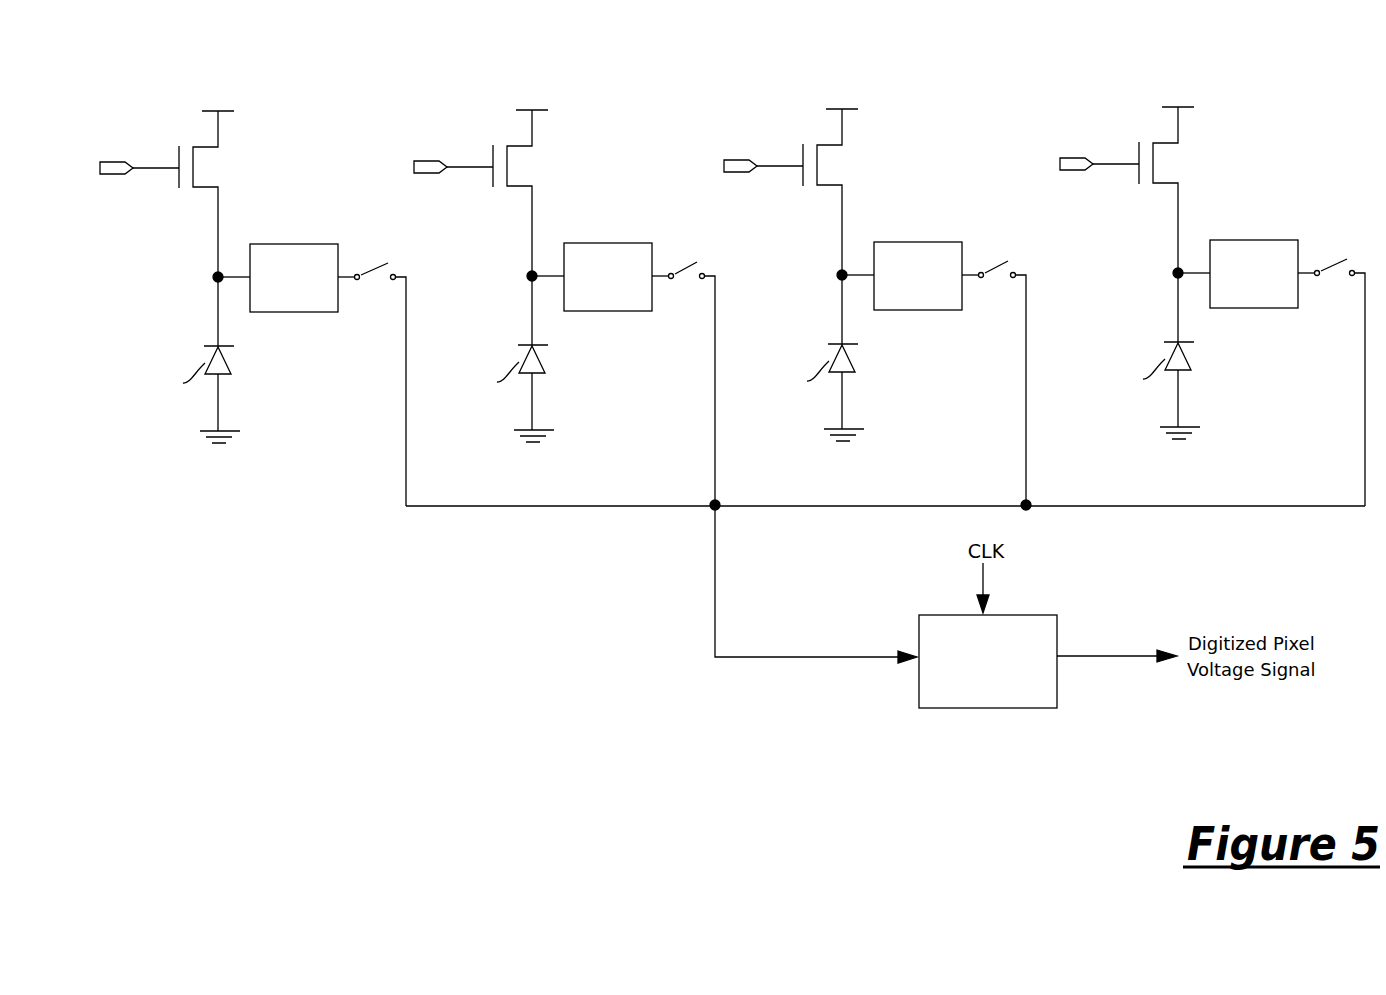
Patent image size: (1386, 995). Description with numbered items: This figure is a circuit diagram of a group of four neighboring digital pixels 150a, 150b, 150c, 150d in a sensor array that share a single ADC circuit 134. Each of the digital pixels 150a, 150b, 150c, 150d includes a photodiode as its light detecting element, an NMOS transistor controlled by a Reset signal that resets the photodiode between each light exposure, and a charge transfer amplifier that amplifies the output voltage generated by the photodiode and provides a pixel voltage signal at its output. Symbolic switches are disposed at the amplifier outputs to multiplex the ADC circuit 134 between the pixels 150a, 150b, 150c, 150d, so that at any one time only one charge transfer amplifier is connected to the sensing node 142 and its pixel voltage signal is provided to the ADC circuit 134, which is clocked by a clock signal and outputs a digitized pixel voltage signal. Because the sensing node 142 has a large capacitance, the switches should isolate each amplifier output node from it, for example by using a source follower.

The digital pixel 150a is at (272, 121).
The digital pixel 150b is at (559, 289).
The digital pixel 150c is at (869, 289).
The digital pixel 150d is at (1206, 288).
The sensing node 142 is at (777, 658).
The ADC circuit 134 is at (1022, 709).